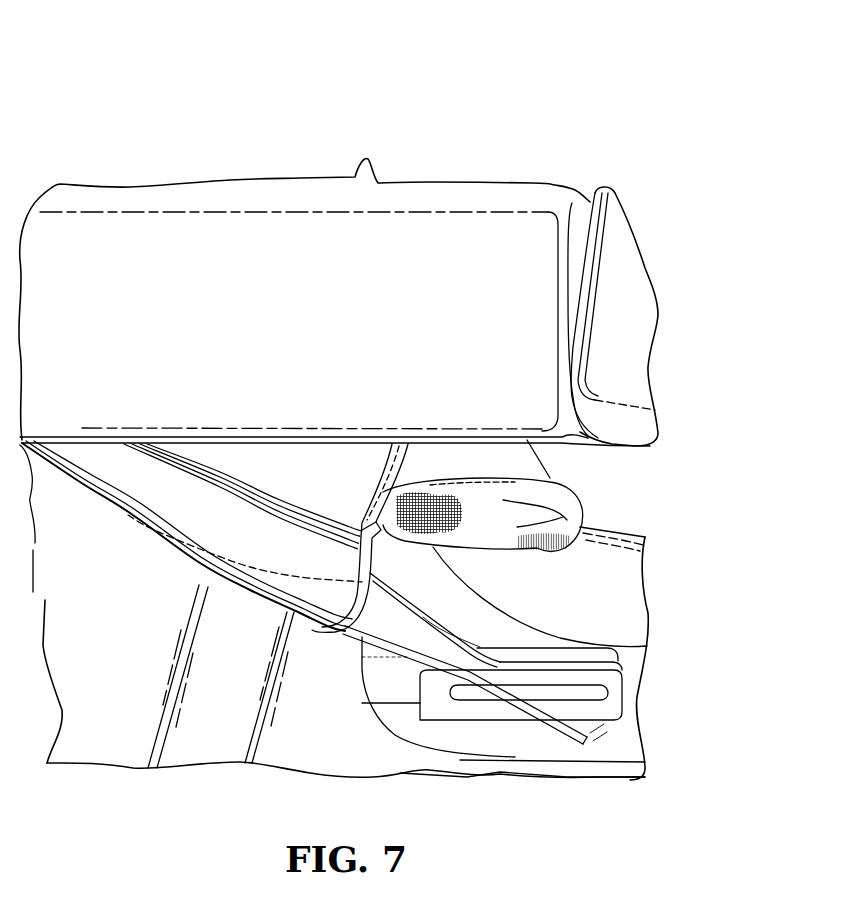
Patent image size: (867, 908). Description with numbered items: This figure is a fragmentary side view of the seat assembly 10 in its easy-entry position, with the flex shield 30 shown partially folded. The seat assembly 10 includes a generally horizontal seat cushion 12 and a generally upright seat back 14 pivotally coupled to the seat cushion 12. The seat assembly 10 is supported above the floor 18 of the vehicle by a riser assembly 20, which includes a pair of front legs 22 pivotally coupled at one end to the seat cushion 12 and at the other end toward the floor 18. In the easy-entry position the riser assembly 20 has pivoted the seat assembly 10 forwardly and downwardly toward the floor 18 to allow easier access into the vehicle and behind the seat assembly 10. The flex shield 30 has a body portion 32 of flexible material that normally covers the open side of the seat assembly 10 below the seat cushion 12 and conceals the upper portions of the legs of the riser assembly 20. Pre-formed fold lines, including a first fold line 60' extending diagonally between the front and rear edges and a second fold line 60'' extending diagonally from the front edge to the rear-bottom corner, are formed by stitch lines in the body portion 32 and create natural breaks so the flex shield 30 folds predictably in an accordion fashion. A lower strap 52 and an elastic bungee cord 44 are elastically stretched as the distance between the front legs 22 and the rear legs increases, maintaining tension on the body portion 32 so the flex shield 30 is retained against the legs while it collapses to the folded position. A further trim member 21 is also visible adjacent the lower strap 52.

The seat assembly 10 is at (660, 93).
The seat cushion 12 is at (338, 230).
The seat back 14 is at (625, 263).
The floor 18 is at (190, 757).
The riser assembly 20 is at (712, 481).
The trim member 21 is at (630, 604).
The front legs 22 is at (397, 630).
The flex shield 30 is at (293, 451).
The body portion 32 is at (347, 492).
The elastic bungee cord 44 is at (513, 703).
The lower strap 52 is at (560, 500).
The first fold line 60' is at (243, 496).
The second fold line 60'' is at (245, 548).